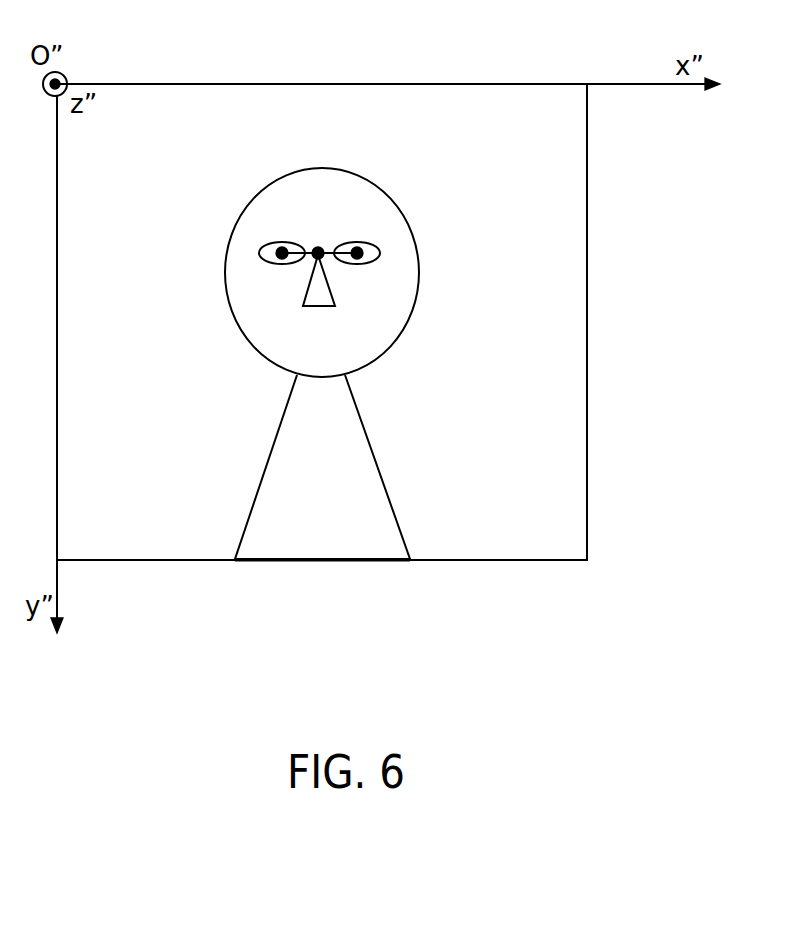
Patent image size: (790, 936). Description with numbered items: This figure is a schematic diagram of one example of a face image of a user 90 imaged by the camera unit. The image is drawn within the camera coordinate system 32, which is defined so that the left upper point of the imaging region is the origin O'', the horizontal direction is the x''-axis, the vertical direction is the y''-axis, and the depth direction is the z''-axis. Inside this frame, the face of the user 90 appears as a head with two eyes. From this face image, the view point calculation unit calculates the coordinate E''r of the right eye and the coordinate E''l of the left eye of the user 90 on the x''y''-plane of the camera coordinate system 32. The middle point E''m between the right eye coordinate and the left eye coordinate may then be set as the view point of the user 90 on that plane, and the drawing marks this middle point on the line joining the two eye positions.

The camera coordinate system 32 is at (618, 84).
The user 90 is at (291, 364).